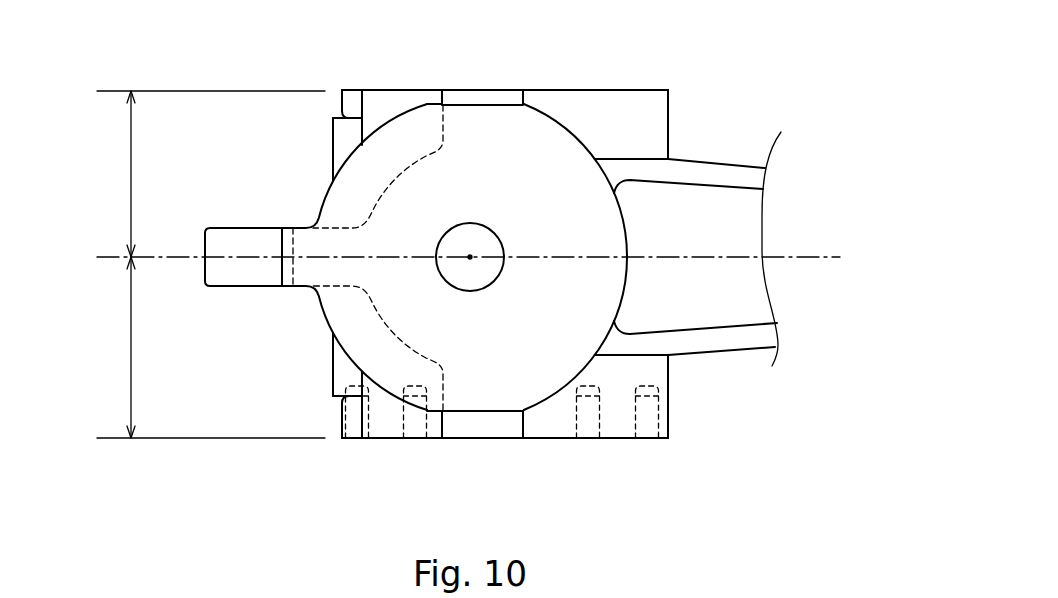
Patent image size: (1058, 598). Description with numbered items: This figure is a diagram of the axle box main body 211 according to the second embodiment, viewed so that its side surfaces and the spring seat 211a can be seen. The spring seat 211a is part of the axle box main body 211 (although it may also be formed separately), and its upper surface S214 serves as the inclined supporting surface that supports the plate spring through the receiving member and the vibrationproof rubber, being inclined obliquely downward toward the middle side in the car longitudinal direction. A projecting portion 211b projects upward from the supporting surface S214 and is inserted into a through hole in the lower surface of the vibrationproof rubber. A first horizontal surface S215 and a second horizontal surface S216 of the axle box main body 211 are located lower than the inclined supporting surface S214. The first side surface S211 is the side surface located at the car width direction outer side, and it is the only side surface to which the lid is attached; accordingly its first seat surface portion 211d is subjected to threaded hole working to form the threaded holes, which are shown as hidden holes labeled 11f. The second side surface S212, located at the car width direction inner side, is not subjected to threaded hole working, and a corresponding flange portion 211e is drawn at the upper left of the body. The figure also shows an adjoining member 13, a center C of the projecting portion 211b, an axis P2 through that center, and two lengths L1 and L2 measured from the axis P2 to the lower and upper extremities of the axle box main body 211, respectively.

The axle box main body 211 is at (668, 107).
The spring seat 211a is at (306, 274).
The projecting portion 211b is at (473, 233).
The first seat surface portion 211d is at (417, 440).
The upper flange 211e is at (407, 88).
The first side surface S211 is at (562, 440).
The second side surface S212 is at (632, 88).
The upper surface S214 is at (540, 133).
The first horizontal surface S215 is at (478, 440).
The second horizontal surface S216 is at (482, 100).
The arm 13 is at (740, 176).
The bolt holes 11f is at (668, 425).
The center C is at (481, 293).
The axis P2 is at (113, 256).
The lower length L1 is at (210, 347).
The upper length L2 is at (210, 174).